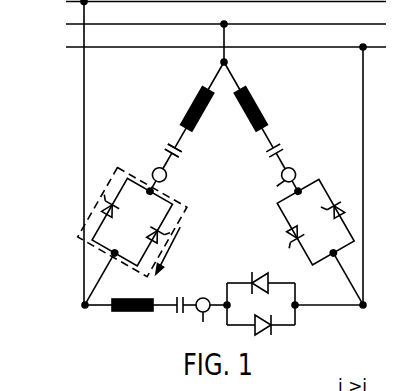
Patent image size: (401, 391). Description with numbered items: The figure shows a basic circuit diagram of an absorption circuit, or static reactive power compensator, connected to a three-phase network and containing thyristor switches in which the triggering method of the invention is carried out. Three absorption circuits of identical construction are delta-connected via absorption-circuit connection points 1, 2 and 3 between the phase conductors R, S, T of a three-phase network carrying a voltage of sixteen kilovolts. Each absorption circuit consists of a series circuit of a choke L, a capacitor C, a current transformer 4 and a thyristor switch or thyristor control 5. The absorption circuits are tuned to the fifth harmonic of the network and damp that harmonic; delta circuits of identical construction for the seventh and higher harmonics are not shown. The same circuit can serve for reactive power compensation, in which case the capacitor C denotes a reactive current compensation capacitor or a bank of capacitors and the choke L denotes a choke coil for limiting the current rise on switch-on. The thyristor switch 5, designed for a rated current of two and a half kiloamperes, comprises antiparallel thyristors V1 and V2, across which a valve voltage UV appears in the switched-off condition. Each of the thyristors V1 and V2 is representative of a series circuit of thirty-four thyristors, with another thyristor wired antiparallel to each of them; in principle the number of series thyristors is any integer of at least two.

The absorption-circuit connection point 1 is at (83, 307).
The absorption-circuit connection point 2 is at (229, 62).
The absorption-circuit connection point 3 is at (373, 312).
The current transformer 4 is at (166, 176).
The thyristor switch 5 is at (116, 169).
The choke L is at (191, 106).
The capacitor C is at (170, 146).
The thyristor V1 is at (104, 195).
The thyristor V2 is at (170, 232).
The phase conductor R is at (233, 7).
The phase conductor S is at (233, 26).
The phase conductor T is at (233, 48).
The valve voltage UV is at (175, 250).